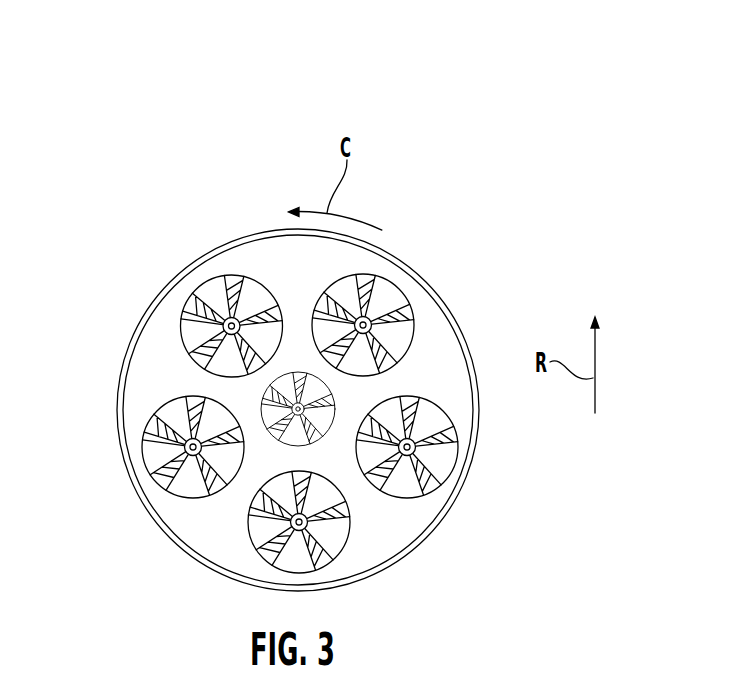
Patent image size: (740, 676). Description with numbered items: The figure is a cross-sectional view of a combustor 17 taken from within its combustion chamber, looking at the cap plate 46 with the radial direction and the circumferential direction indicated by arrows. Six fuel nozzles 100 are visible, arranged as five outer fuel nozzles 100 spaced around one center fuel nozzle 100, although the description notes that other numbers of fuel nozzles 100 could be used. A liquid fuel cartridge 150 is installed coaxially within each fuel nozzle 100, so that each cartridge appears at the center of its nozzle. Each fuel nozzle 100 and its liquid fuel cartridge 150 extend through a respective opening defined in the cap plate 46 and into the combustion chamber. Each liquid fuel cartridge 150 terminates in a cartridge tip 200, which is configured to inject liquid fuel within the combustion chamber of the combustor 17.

The combustor 17 is at (137, 128).
The cap plate 46 is at (212, 528).
The fuel nozzle 100 is at (228, 320).
The liquid fuel cartridge 150 is at (228, 318).
The cartridge tip 200 is at (368, 318).